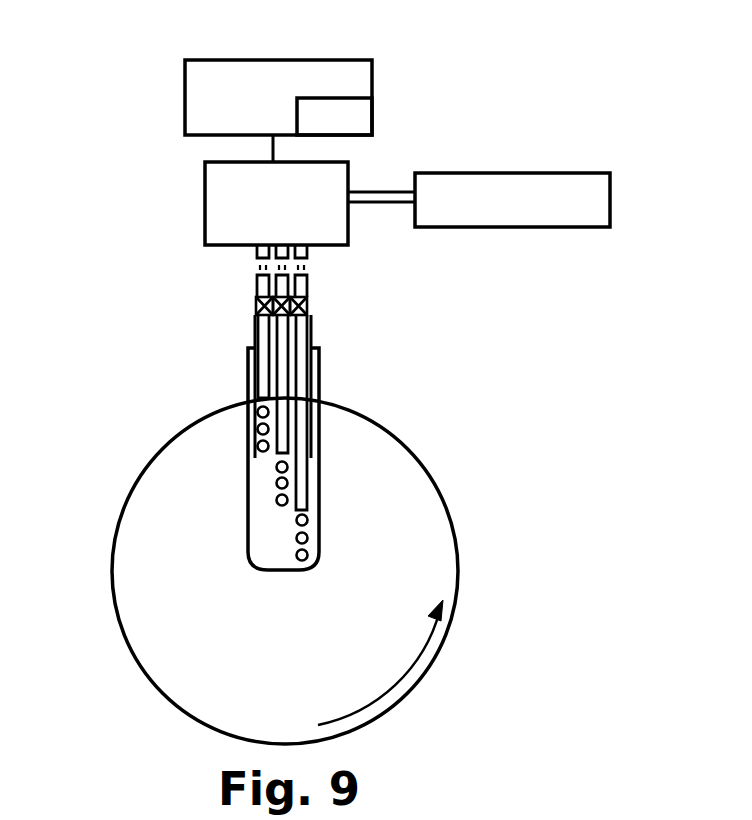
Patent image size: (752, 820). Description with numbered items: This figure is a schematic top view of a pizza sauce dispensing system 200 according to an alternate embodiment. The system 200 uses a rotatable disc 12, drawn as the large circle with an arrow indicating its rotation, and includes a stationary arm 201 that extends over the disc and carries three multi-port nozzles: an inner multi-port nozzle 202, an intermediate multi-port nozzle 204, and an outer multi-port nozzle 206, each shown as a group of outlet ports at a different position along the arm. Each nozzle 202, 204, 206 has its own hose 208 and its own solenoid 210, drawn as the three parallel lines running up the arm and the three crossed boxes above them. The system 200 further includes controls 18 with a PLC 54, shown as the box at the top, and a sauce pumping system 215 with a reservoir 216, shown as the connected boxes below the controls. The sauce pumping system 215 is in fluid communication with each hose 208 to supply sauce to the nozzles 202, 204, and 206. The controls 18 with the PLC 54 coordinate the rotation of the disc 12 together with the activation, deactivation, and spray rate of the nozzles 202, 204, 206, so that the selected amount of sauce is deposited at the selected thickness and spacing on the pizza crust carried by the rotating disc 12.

The pizza sauce dispensing system 200 is at (132, 97).
The controls 18 is at (323, 60).
The PLC 54 is at (372, 115).
The sauce pumping system 215 is at (205, 203).
The reservoir 216 is at (610, 197).
The solenoid 210 is at (256, 302).
The hose 208 is at (257, 332).
The outer multi-port nozzle 206 is at (241, 408).
The intermediate multi-port nozzle 204 is at (276, 460).
The inner multi-port nozzle 202 is at (325, 561).
The stationary arm 201 is at (250, 548).
The rotatable disc 12 is at (434, 482).